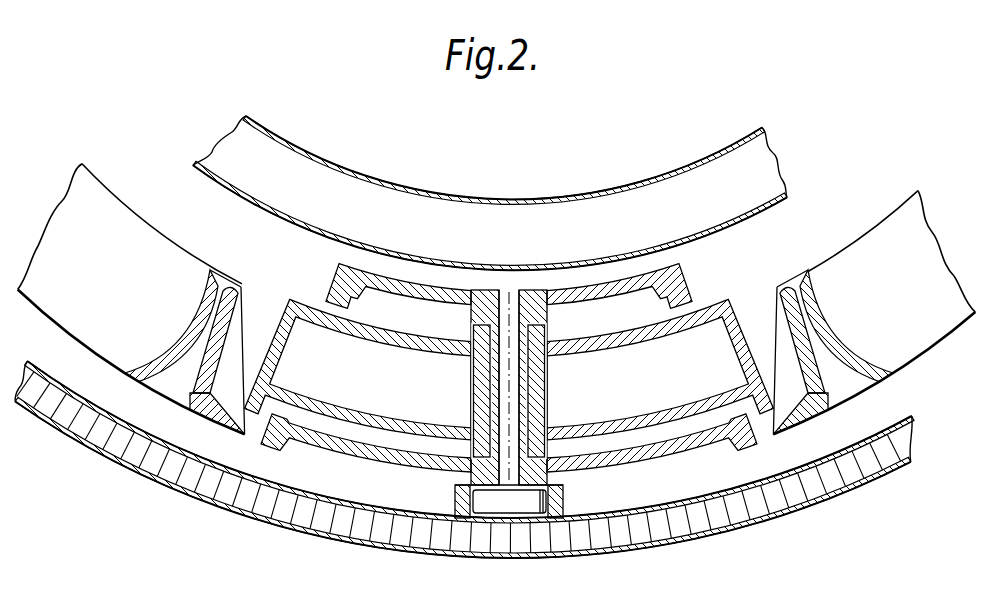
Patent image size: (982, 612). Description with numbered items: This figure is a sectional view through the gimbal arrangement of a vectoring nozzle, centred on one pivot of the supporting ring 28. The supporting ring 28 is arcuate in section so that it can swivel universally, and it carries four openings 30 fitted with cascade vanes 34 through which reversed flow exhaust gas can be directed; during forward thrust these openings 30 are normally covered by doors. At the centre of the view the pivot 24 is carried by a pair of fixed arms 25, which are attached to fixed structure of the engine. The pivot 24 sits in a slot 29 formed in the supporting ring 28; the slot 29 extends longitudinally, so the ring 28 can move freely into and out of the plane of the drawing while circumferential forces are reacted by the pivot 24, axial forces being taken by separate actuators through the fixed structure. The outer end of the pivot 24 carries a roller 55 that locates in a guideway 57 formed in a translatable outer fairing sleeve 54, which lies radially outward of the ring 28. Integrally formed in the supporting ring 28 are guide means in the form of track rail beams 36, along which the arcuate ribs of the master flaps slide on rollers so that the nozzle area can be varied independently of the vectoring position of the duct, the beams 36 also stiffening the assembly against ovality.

The pivot 24 is at (500, 400).
The fixed arm 25 is at (688, 284).
The supporting ring 28 is at (828, 257).
The slot 29 is at (538, 395).
The opening 30 is at (497, 299).
The cascade vane 34 is at (203, 290).
The track rail beam 36 is at (265, 342).
The translatable outer fairing sleeve 54 is at (762, 508).
The roller 55 is at (508, 502).
The guideway 57 is at (566, 500).